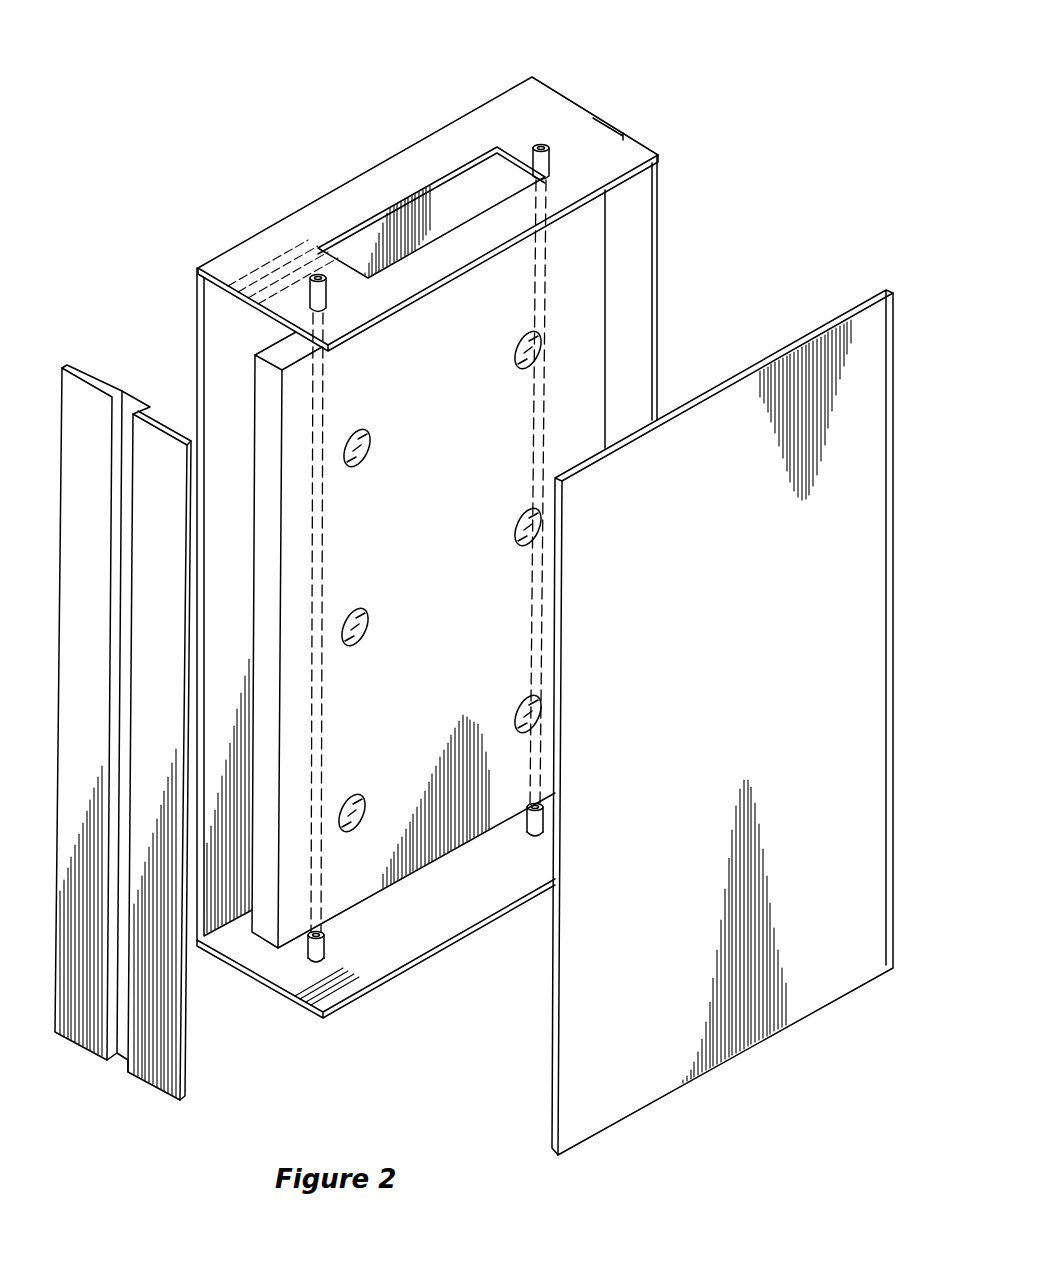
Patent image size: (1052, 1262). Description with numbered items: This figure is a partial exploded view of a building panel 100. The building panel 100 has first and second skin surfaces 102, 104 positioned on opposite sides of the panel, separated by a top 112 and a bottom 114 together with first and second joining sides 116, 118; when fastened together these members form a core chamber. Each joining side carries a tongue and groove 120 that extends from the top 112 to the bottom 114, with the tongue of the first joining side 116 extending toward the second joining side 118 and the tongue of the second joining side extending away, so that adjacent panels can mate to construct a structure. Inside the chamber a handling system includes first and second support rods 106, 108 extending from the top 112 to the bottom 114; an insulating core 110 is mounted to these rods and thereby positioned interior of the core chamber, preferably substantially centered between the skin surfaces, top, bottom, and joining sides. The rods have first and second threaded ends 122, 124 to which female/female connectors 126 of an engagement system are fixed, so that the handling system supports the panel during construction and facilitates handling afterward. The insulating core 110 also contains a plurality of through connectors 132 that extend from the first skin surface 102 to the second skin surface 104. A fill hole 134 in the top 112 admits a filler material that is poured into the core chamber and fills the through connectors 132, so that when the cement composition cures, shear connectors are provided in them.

The building panel 100 is at (768, 176).
The first skin surface 102 is at (590, 1073).
The second skin surface 104 is at (197, 300).
The first support rod 106 is at (277, 915).
The second support rod 108 is at (540, 258).
The insulating core 110 is at (415, 785).
The top 112 is at (542, 110).
The bottom 114 is at (423, 917).
The first joining side 116 is at (155, 1070).
The second joining side 118 is at (655, 222).
The tongue and groove 120 is at (128, 393).
The first threaded end 122 is at (528, 172).
The second threaded end 124 is at (327, 937).
The female/female connector 126 is at (548, 152).
The through connector 132 is at (367, 433).
The fill hole 134 is at (473, 188).